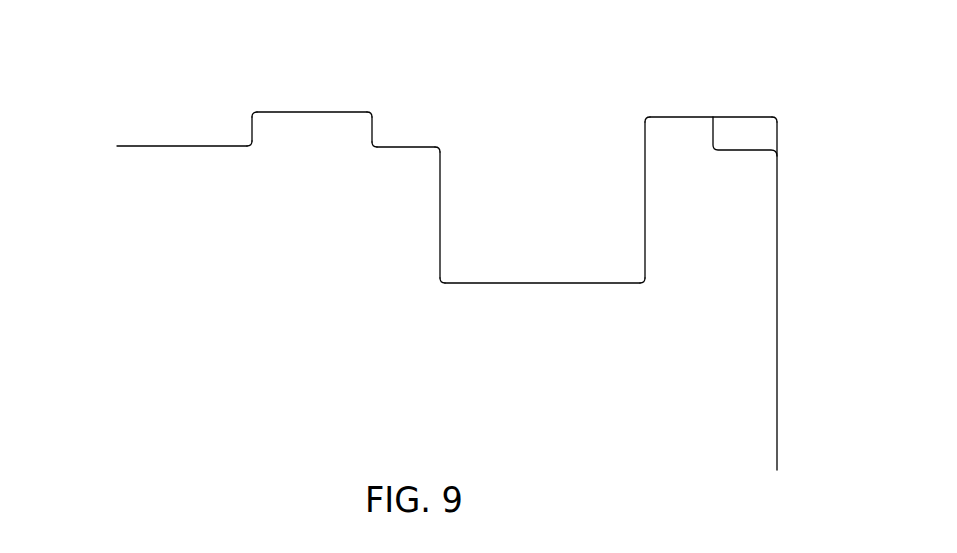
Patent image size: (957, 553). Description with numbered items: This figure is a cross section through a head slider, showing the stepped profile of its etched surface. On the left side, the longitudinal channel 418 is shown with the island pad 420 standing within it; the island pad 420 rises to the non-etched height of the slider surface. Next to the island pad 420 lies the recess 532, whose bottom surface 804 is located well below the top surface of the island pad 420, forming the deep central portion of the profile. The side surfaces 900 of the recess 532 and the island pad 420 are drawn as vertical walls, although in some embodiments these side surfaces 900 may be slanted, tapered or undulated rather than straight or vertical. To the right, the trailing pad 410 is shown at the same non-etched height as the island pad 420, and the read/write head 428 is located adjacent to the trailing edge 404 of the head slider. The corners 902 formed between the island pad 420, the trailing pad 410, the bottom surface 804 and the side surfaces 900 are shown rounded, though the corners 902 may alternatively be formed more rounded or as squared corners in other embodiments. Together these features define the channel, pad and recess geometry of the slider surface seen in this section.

The longitudinal channel 418 is at (196, 127).
The island pad 420 is at (303, 112).
The corners 902 is at (252, 111).
The side surfaces 900 is at (253, 128).
The bottom surface 804 is at (553, 283).
The recess 532 is at (566, 64).
The trailing pad 410 is at (684, 116).
The read/write head 428 is at (778, 116).
The trailing edge 404 is at (777, 297).